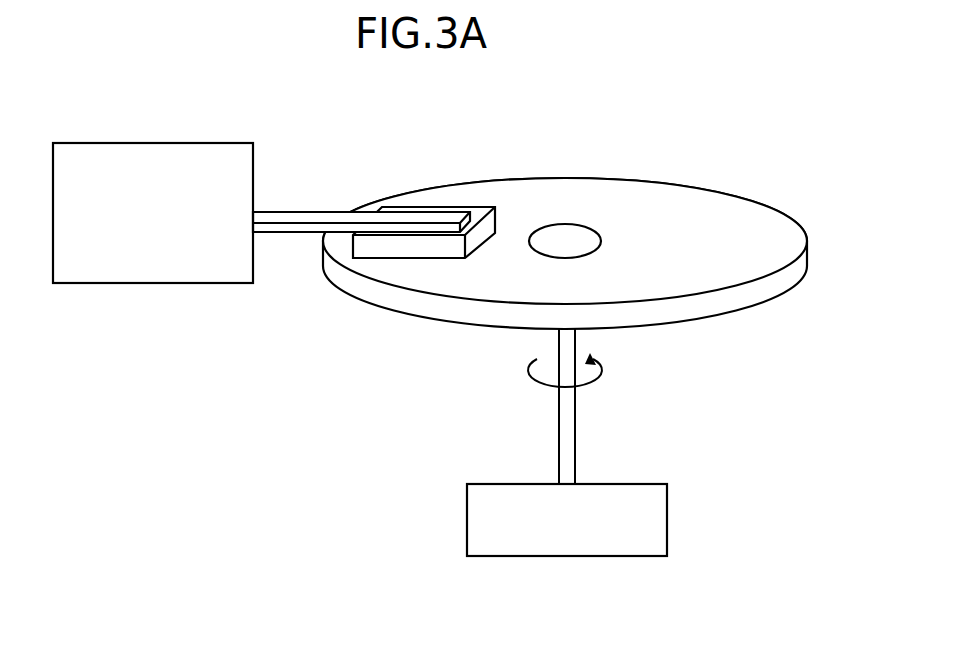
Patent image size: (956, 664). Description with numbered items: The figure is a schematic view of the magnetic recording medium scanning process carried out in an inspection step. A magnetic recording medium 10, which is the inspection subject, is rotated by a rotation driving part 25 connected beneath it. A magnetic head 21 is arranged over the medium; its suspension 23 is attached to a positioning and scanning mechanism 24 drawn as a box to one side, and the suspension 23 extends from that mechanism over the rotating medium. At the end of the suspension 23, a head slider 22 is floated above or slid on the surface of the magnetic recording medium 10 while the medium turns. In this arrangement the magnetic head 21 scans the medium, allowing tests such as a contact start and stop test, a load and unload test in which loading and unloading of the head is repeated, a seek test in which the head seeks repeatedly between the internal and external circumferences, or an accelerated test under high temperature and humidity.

The magnetic recording medium 10 is at (680, 322).
The magnetic head 21 is at (422, 195).
The head slider 22 is at (496, 210).
The suspension 23 is at (277, 211).
The positioning and scanning mechanism 24 is at (192, 143).
The rotation driving part 25 is at (603, 483).